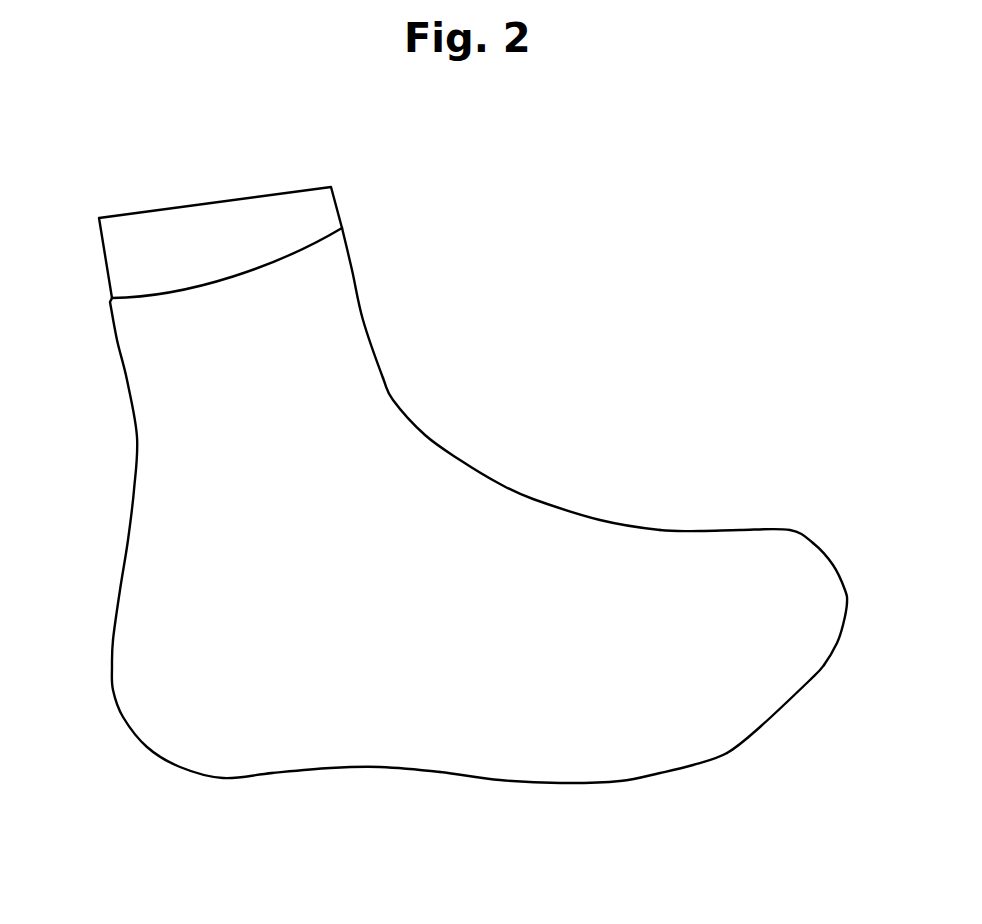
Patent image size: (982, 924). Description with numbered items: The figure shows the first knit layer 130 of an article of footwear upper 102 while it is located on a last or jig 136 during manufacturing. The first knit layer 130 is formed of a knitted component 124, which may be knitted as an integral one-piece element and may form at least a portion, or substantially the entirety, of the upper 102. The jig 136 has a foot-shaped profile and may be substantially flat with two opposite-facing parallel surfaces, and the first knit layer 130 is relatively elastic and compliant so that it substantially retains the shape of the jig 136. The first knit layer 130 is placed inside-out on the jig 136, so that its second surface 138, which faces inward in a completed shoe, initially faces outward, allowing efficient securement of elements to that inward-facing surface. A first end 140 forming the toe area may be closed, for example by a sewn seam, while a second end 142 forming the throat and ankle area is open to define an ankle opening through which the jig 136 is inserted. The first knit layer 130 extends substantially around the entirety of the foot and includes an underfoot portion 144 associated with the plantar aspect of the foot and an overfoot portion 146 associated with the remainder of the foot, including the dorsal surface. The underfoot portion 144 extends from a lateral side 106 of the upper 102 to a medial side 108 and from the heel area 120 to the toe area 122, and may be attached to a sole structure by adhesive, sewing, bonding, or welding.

The upper 102 is at (792, 560).
The lateral side 106 is at (533, 665).
The medial side 108 is at (533, 498).
The heel area 120 is at (132, 646).
The toe area 122 is at (803, 667).
The knitted component 124 is at (163, 469).
The first knit layer 130 is at (345, 323).
The jig 136 is at (158, 213).
The second surface 138 is at (318, 660).
The first end 140 is at (845, 625).
The second end 142 is at (310, 243).
The underfoot portion 144 is at (422, 773).
The overfoot portion 146 is at (663, 578).